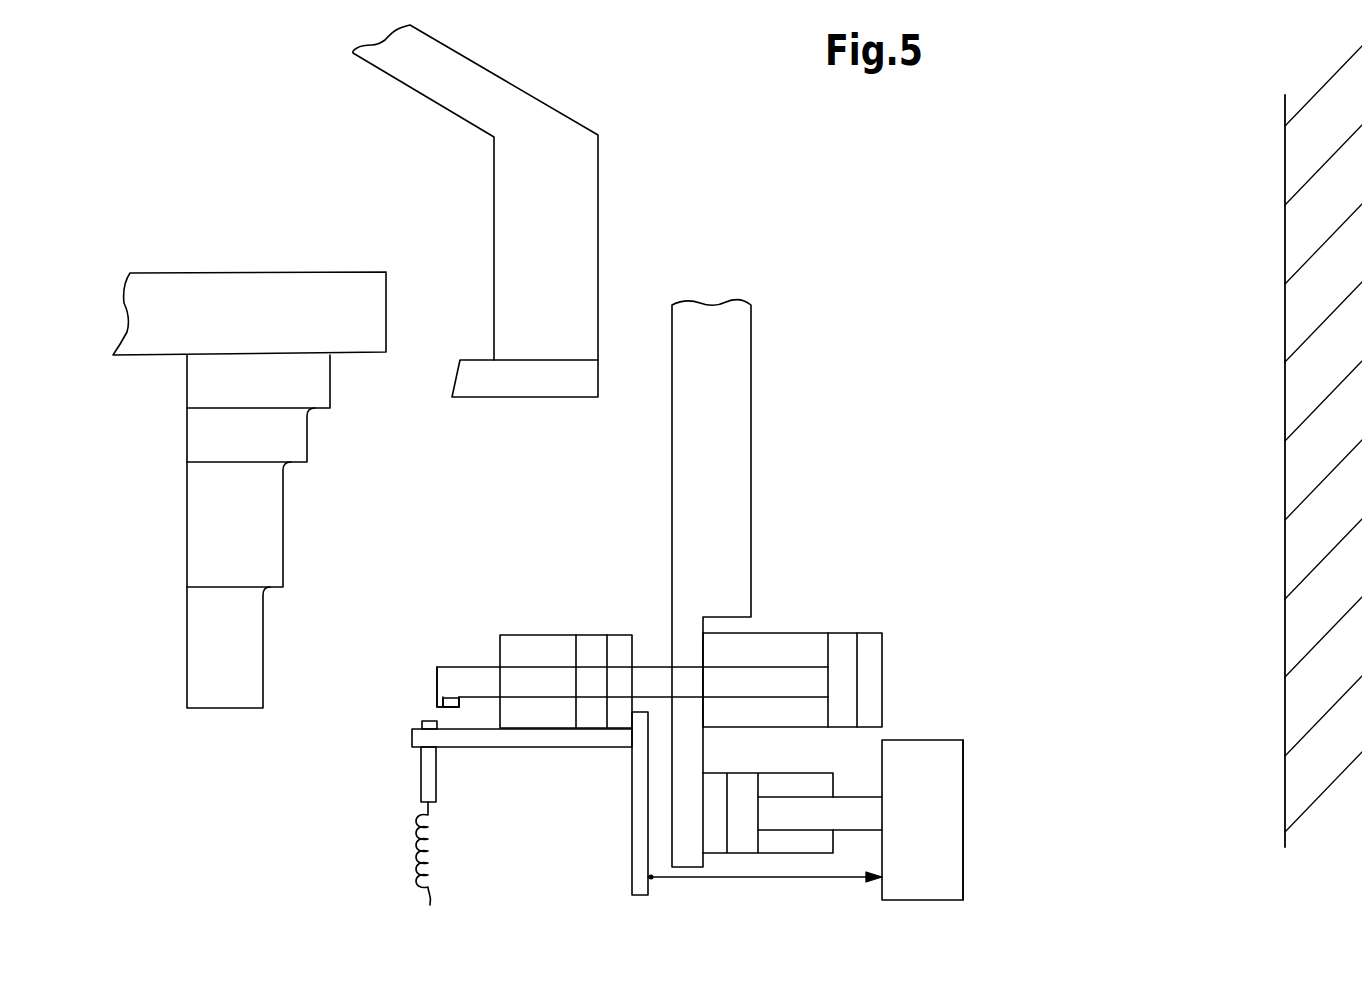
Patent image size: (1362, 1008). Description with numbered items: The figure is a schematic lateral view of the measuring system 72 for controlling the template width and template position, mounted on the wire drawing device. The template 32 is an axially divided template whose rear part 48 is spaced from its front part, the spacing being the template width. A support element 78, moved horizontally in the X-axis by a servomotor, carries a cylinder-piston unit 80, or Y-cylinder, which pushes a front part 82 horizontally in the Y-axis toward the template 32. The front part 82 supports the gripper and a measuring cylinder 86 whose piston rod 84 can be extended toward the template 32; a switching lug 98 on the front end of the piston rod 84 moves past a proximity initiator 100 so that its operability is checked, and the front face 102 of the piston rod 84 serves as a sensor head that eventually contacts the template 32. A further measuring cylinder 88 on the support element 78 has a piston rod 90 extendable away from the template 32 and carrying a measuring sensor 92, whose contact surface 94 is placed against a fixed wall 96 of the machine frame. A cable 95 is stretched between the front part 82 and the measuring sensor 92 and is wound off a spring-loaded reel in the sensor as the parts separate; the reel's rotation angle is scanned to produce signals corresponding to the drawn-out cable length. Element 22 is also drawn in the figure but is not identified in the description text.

The arm 22 is at (545, 123).
The template 32 is at (311, 268).
The rear part 48 is at (268, 515).
The measuring system 72 is at (783, 607).
The support element 78 is at (740, 348).
The cylinder-piston unit 80 is at (815, 653).
The front part 82 is at (635, 795).
The piston rod 84 is at (488, 673).
The measuring cylinder 86 is at (568, 650).
The measuring cylinder 88 is at (788, 778).
The piston rod 90 is at (858, 803).
The measuring sensor 92 is at (923, 755).
The contact surface 94 is at (963, 768).
The cable 95 is at (758, 878).
The fixed wall 96 is at (1285, 725).
The switching lug 98 is at (442, 707).
The proximity initiator 100 is at (423, 725).
The front face 102 is at (440, 670).